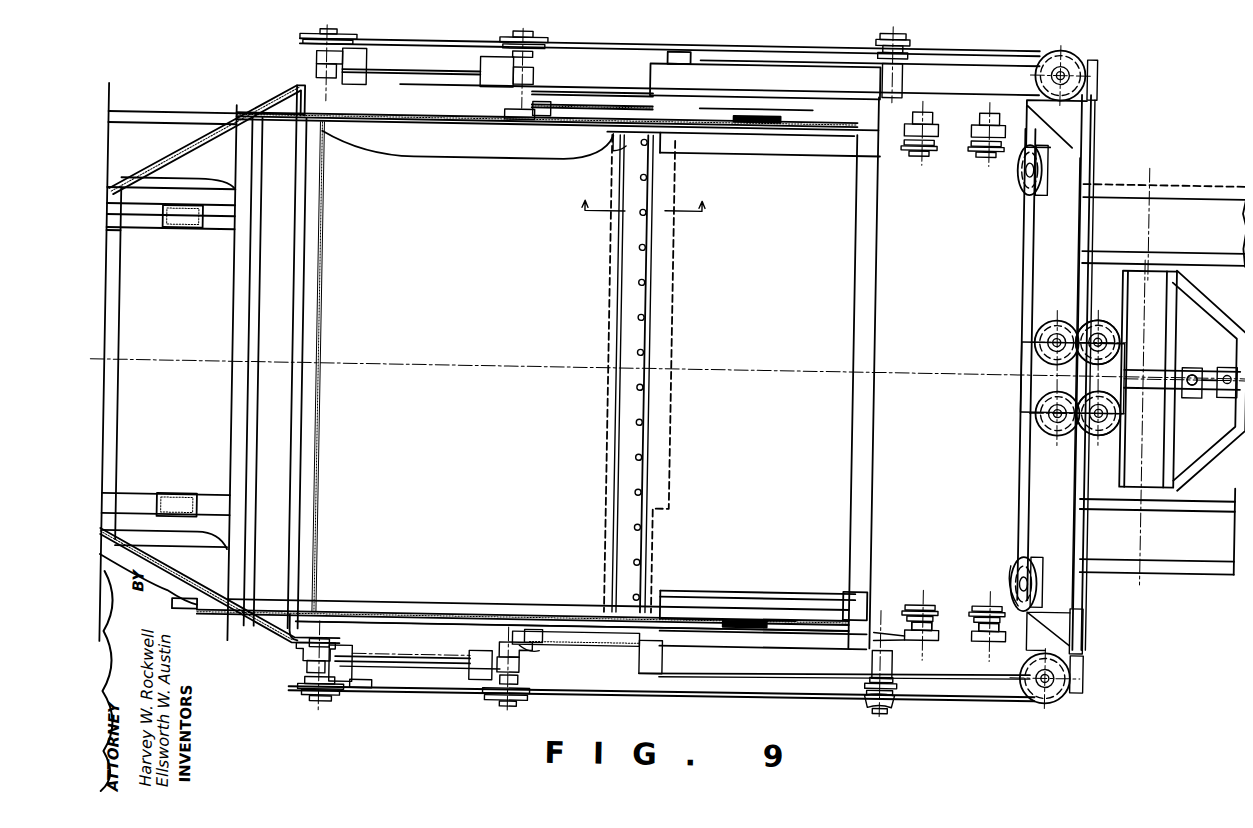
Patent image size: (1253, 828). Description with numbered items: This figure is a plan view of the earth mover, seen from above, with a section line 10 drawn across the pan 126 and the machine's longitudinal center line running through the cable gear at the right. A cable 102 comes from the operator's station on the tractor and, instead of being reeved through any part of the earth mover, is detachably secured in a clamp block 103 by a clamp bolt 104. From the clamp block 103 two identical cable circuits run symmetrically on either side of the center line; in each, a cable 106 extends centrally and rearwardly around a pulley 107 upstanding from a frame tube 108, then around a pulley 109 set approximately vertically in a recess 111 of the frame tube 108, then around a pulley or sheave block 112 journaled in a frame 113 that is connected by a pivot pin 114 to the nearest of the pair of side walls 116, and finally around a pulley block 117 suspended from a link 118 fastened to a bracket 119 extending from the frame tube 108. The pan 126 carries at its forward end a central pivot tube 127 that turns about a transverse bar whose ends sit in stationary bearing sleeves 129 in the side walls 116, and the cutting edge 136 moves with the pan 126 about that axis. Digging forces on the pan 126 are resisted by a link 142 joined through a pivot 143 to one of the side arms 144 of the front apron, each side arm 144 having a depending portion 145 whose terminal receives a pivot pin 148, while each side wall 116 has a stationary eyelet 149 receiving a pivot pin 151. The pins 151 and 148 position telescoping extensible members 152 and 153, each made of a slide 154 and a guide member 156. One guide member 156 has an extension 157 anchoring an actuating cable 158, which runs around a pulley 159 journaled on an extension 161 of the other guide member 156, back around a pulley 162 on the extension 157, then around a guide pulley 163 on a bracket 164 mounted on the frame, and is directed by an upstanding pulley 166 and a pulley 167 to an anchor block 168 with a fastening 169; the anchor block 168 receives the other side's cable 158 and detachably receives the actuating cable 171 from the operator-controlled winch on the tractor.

The section line 10 is at (640, 220).
The cable 102 is at (1232, 408).
The clamp block 103 is at (1203, 400).
The clamp bolt 104 is at (1227, 387).
The cable 106 is at (1021, 306).
The pulley 107 is at (1036, 344).
The frame tube 108 is at (1021, 466).
The pulley 109 is at (1014, 571).
The recess 111 is at (1040, 588).
The pulley or sheave block 112 is at (906, 598).
The frame 113 is at (927, 626).
The pivot pin 114 is at (915, 637).
The side walls 116 is at (520, 125).
The pulley block 117 is at (957, 598).
The link 118 is at (970, 626).
The bracket 119 is at (1087, 630).
The pan 126 is at (321, 507).
The central pivot tube 127 is at (608, 483).
The bearing sleeves 129 is at (615, 141).
The cutting edge 136 is at (671, 471).
The link 142 is at (542, 631).
The pivot 143 is at (532, 658).
The side arms 144 is at (735, 645).
The depending portion 145 is at (590, 648).
The pivot pin 148 is at (512, 644).
The stationary eyelet 149 is at (300, 651).
The pivot pin 151 is at (326, 644).
The telescoping extensible member 152 is at (370, 672).
The telescoping extensible member 153 is at (440, 665).
The slide 154 is at (423, 692).
The guide member 156 is at (357, 652).
The extension 157 is at (352, 694).
The actuating cable 158 is at (1084, 288).
The pulley 159 is at (492, 703).
The extension 161 is at (526, 684).
The pulley 162 is at (306, 707).
The guide pulley 163 is at (886, 705).
The bracket 164 is at (875, 663).
The pulley 166 is at (1030, 73).
The pulley 167 is at (1096, 313).
The anchor block 168 is at (1193, 388).
The fastening 169 is at (1192, 358).
The actuating cable 171 is at (1217, 362).